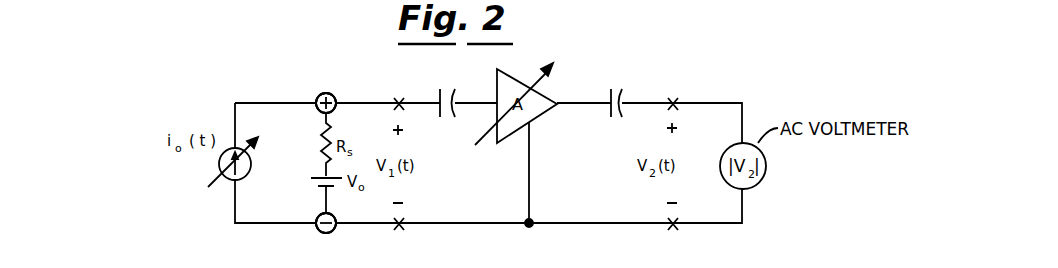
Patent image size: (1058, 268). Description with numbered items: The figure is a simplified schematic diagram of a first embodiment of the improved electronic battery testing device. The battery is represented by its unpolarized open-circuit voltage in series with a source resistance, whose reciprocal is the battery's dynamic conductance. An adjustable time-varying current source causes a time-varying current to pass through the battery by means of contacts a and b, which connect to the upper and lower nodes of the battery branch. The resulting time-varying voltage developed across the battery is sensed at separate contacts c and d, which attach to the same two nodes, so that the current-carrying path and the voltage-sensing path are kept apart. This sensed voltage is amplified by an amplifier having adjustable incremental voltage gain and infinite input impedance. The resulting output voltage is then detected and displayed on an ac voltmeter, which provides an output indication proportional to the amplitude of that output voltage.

The contact a is at (316, 103).
The contact b is at (316, 223).
The contact c is at (336, 103).
The contact d is at (336, 223).